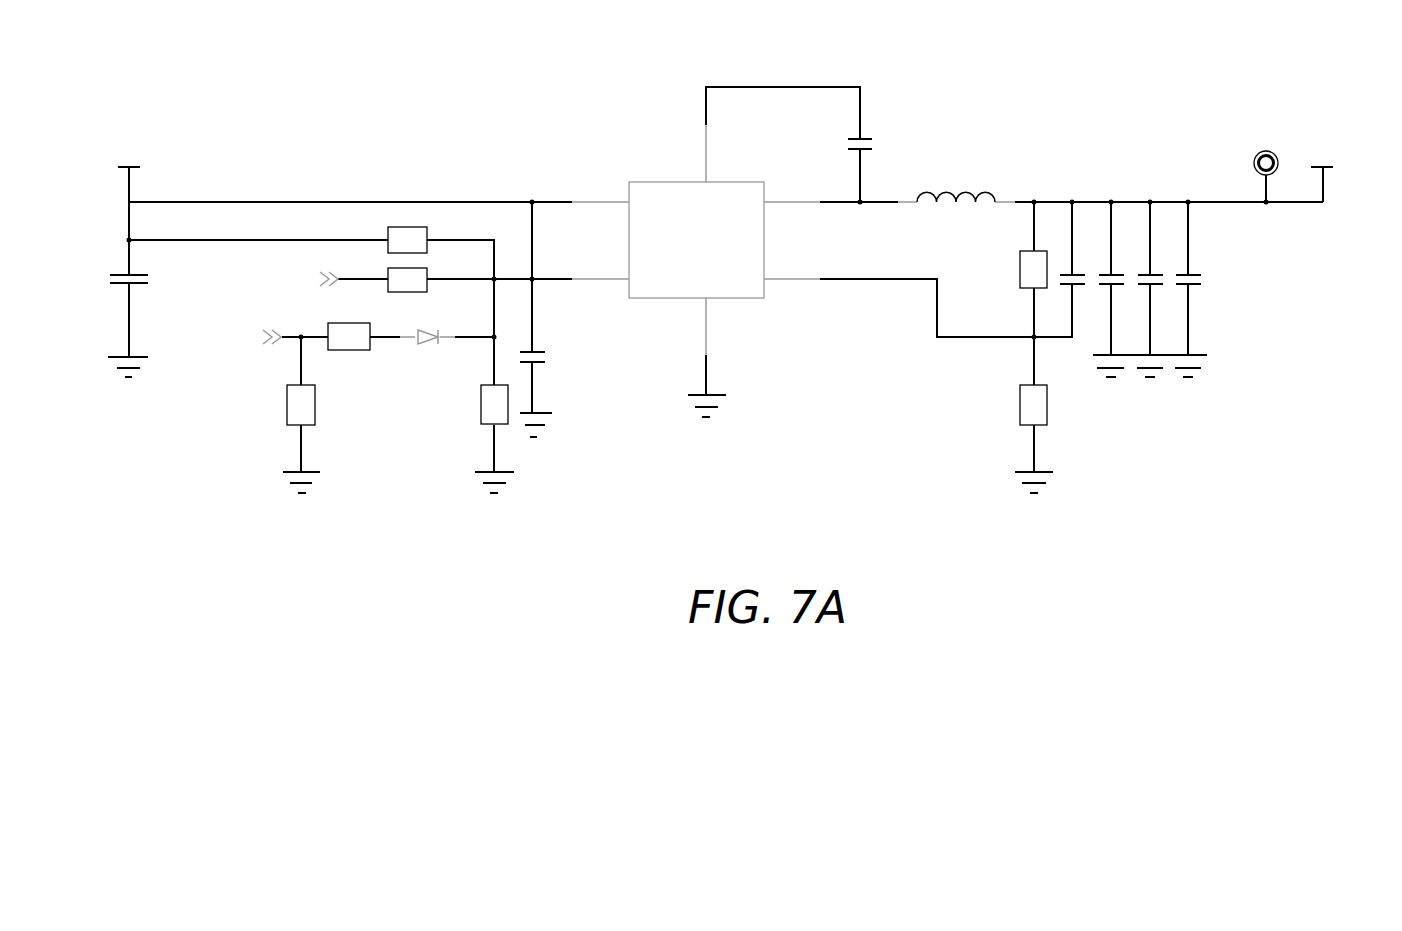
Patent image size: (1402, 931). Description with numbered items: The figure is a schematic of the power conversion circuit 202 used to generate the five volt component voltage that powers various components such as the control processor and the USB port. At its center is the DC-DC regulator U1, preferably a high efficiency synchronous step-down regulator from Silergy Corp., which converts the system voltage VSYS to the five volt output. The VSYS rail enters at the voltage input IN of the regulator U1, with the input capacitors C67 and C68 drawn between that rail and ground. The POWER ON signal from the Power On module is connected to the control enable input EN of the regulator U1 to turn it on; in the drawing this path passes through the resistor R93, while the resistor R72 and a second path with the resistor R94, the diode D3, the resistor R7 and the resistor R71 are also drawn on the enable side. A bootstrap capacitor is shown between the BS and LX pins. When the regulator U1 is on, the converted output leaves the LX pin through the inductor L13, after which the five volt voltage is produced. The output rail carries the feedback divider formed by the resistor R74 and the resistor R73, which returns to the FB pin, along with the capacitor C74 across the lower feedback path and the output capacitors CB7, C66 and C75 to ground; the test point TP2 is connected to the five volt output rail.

The power conversion circuit 202 is at (597, 101).
The DC-DC regulator U1 is at (696, 240).
The resistor DN1 R72 is at (407, 230).
The resistor 10K R93 is at (388, 273).
The resistor 10K R94 is at (349, 326).
The diode 1N5819W D3 is at (426, 339).
The resistor 10K R7 is at (290, 405).
The resistor 510K R71 is at (483, 405).
The capacitor 22uF 16V C67 is at (125, 297).
The capacitor 10uF 16V C68 is at (528, 343).
The inductor 3.3uH L13 is at (958, 194).
The resistor 270K R74 is at (1022, 269).
The resistor 36K R73 is at (1022, 405).
The capacitor 10nF C74 is at (1064, 274).
The capacitor 10uF 16V CB7 is at (1103, 285).
The capacitor 10uF 16V C66 is at (1142, 285).
The capacitor 100nF C75 is at (1181, 285).
The test point TP2 is at (1265, 150).